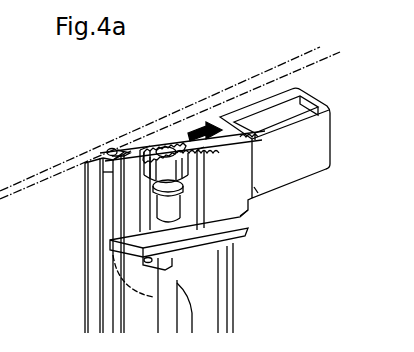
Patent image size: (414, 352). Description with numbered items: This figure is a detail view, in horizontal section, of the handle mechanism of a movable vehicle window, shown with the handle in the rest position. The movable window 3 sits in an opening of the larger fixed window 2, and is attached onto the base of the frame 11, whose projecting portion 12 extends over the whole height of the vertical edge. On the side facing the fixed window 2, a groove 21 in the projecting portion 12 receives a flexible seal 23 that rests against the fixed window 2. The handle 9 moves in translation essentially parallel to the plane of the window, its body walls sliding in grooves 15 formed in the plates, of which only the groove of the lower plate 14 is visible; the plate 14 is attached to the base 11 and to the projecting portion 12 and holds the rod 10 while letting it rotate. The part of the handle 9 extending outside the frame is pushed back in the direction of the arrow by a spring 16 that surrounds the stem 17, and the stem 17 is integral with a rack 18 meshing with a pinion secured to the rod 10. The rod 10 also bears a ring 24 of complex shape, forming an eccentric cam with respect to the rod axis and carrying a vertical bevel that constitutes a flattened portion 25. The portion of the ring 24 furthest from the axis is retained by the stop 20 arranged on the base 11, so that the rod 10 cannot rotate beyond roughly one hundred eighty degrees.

The fixed window 2 is at (79, 242).
The movable window 3 is at (247, 288).
The handle 9 is at (311, 157).
The rod 10 is at (167, 313).
The base of the frame 11 is at (146, 315).
The projecting portion 12 is at (127, 198).
The lower plate 14 is at (166, 237).
The grooves 15 is at (160, 252).
The spring 16 is at (240, 143).
The stem 17 is at (247, 137).
The rack 18 is at (213, 150).
The stop 20 is at (143, 179).
The groove 21 is at (108, 153).
The flexible seal 23 is at (110, 150).
The ring 24 is at (172, 188).
The flattened portion 25 is at (183, 195).